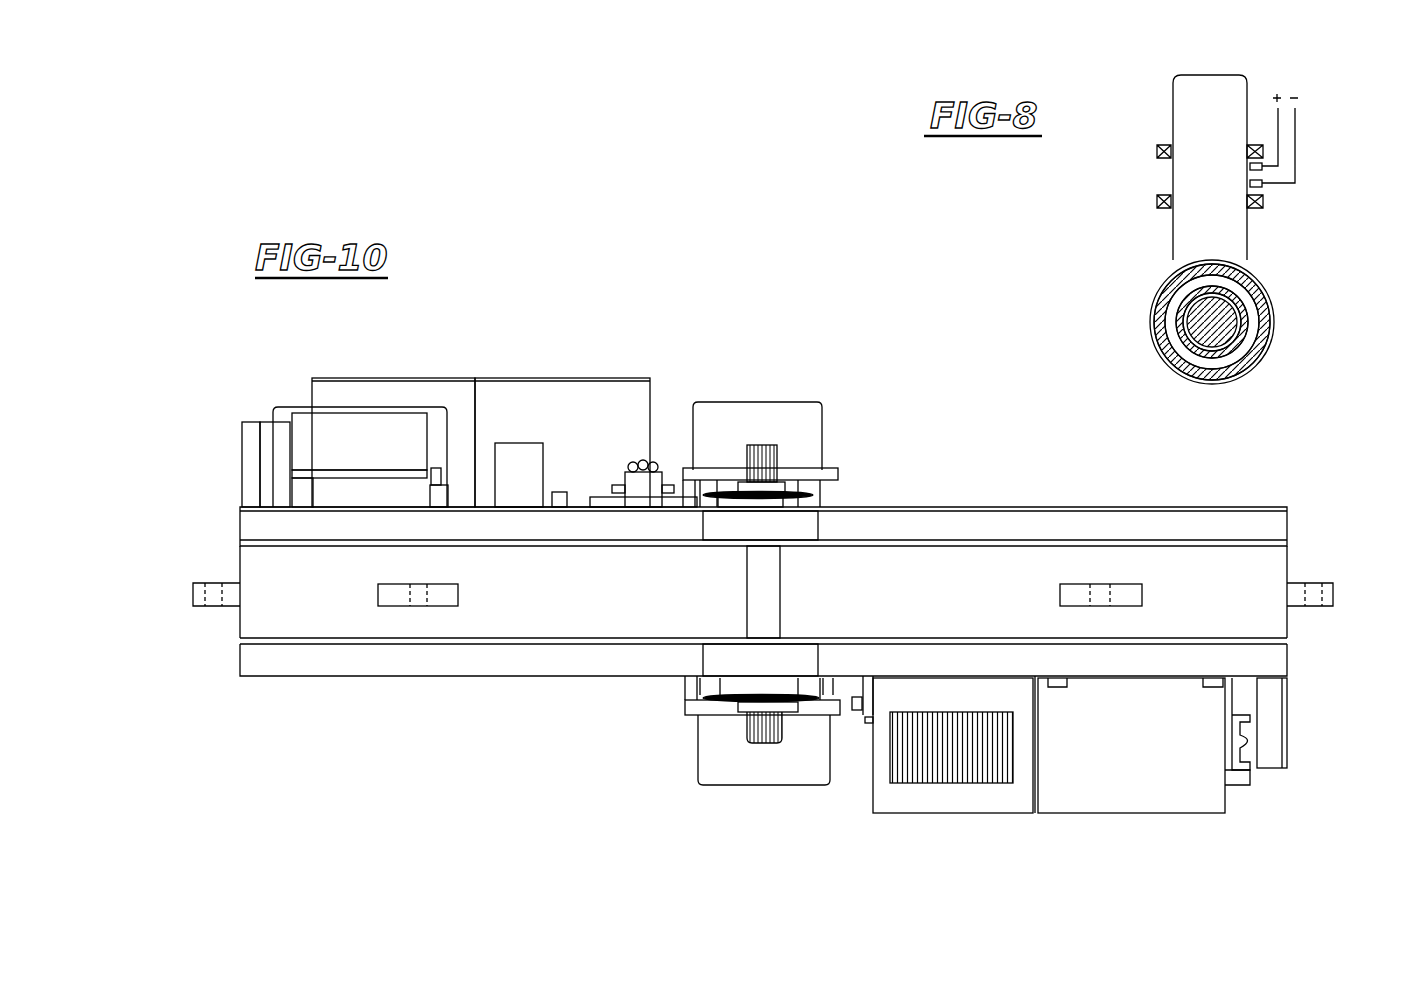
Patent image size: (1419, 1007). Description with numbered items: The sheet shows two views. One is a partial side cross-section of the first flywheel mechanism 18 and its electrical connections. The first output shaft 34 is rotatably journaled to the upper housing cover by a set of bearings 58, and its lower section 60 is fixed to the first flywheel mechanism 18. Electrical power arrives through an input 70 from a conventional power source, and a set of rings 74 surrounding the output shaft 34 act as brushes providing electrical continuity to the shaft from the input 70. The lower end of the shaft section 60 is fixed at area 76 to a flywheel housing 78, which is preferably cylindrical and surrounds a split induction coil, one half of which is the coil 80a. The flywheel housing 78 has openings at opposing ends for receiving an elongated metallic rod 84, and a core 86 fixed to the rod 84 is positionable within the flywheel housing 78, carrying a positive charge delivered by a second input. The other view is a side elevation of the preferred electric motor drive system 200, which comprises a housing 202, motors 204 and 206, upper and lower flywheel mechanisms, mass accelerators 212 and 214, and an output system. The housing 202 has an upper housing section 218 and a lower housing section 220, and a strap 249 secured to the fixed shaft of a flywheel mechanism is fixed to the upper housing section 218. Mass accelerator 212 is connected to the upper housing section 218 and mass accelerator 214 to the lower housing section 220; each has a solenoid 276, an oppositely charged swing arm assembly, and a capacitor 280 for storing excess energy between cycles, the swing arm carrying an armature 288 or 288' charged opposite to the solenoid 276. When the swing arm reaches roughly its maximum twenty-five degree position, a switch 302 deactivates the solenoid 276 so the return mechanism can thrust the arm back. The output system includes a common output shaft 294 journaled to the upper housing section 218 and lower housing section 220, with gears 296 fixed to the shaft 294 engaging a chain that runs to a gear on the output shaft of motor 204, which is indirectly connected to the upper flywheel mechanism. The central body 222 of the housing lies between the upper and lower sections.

In FIG. 10, the electric motor drive system 200 is at (626, 270).
In FIG. 10, the housing 202 is at (1054, 490).
In FIG. 10, the motor 204 is at (716, 433).
In FIG. 10, the motor 206 is at (778, 775).
In FIG. 10, the mass accelerator 212 is at (286, 397).
In FIG. 10, the mass accelerator 214 is at (1080, 803).
In FIG. 10, the upper housing section 218 is at (250, 517).
In FIG. 10, the lower housing section 220 is at (258, 660).
In FIG. 10, the middle body 222 is at (260, 620).
In FIG. 10, the strap 249 is at (668, 490).
In FIG. 10, the solenoid 276 is at (496, 389).
In FIG. 10, the capacitor 280 is at (520, 455).
In FIG. 10, the armature 288 is at (345, 457).
In FIG. 10, the armature 288' is at (1259, 777).
In FIG. 10, the common output shaft 294 is at (757, 576).
In FIG. 10, the gears 296 is at (818, 496).
In FIG. 10, the switch 302 is at (560, 491).
In FIG. 8, the first flywheel mechanism 18 is at (1150, 310).
In FIG. 8, the first output shaft 34 is at (1178, 102).
In FIG. 8, the bearings 58 is at (1158, 152).
In FIG. 8, the lower section of the output shaft 60 is at (1166, 265).
In FIG. 8, the input 70 is at (1310, 106).
In FIG. 8, the rings 74 is at (1270, 177).
In FIG. 8, the area 76 is at (1250, 262).
In FIG. 8, the flywheel housing 78 is at (1158, 350).
In FIG. 8, the split induction coil 80a is at (1268, 322).
In FIG. 8, the elongated metallic rod 84 is at (1238, 335).
In FIG. 8, the core 86 is at (1212, 345).